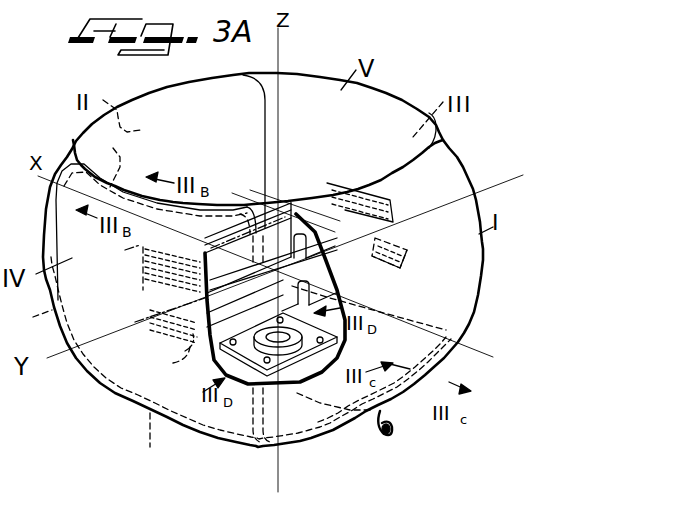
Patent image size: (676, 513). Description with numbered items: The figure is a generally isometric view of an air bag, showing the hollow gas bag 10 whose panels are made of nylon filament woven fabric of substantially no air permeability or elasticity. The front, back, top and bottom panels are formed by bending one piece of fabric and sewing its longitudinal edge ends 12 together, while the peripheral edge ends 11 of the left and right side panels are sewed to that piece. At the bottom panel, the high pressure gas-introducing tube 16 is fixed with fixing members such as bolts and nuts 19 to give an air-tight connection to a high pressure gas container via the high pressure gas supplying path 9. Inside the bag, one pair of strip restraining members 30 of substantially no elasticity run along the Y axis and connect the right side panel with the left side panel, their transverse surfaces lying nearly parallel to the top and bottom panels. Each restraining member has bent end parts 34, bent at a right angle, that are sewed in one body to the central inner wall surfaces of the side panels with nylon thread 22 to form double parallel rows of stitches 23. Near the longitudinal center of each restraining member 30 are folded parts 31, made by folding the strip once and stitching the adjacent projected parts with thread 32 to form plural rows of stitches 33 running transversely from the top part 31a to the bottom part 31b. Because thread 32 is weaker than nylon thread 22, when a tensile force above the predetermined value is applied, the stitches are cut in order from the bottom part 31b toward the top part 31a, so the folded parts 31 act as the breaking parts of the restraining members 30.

The high pressure gas supplying path 9 is at (380, 432).
The gas bag 10 is at (161, 96).
The peripheral edge ends 11 is at (242, 284).
The edge ends 12 is at (410, 392).
The high pressure gas-introducing tube 16 is at (340, 350).
The bolts and nuts 19 is at (281, 352).
The nylon thread 22 is at (345, 201).
The double parallel rows of stitches 23 is at (378, 202).
The strip restraining members 30 is at (385, 268).
The folded parts 31 is at (295, 250).
The top part 31a is at (285, 222).
The bottom part 31b is at (318, 262).
The thread 32 is at (261, 200).
The rows of stitches 33 is at (258, 252).
The bent end parts 34 is at (398, 195).